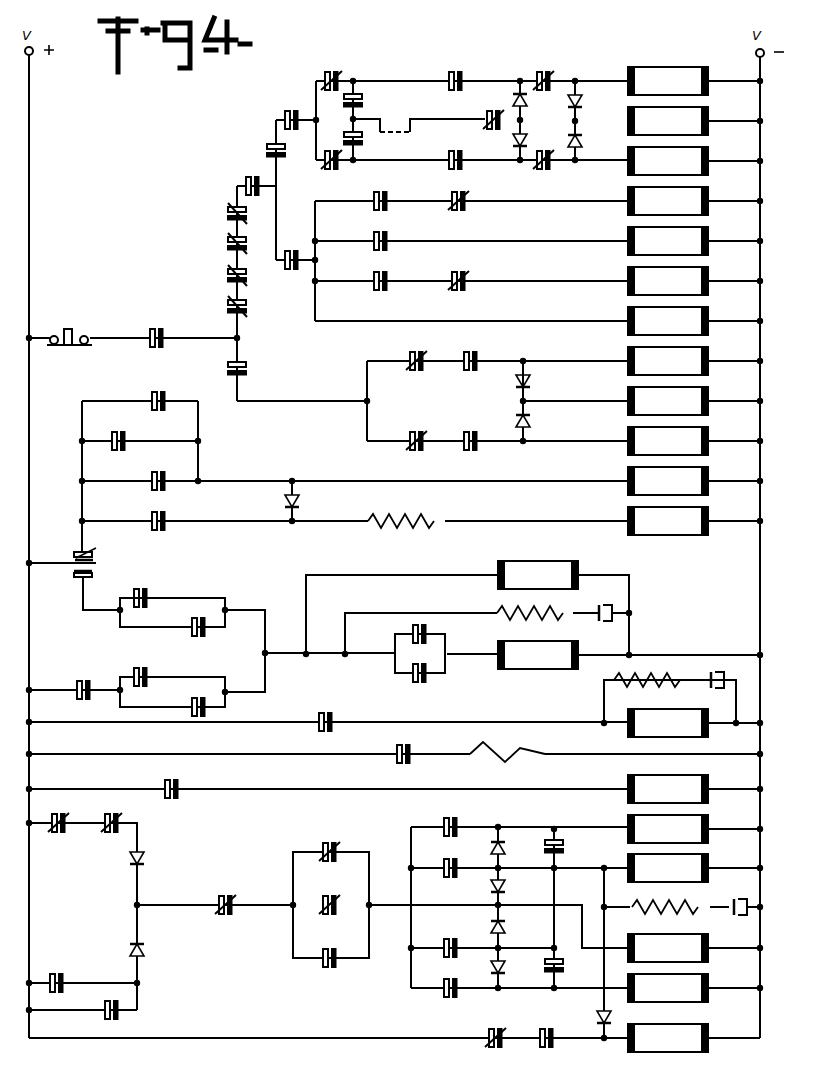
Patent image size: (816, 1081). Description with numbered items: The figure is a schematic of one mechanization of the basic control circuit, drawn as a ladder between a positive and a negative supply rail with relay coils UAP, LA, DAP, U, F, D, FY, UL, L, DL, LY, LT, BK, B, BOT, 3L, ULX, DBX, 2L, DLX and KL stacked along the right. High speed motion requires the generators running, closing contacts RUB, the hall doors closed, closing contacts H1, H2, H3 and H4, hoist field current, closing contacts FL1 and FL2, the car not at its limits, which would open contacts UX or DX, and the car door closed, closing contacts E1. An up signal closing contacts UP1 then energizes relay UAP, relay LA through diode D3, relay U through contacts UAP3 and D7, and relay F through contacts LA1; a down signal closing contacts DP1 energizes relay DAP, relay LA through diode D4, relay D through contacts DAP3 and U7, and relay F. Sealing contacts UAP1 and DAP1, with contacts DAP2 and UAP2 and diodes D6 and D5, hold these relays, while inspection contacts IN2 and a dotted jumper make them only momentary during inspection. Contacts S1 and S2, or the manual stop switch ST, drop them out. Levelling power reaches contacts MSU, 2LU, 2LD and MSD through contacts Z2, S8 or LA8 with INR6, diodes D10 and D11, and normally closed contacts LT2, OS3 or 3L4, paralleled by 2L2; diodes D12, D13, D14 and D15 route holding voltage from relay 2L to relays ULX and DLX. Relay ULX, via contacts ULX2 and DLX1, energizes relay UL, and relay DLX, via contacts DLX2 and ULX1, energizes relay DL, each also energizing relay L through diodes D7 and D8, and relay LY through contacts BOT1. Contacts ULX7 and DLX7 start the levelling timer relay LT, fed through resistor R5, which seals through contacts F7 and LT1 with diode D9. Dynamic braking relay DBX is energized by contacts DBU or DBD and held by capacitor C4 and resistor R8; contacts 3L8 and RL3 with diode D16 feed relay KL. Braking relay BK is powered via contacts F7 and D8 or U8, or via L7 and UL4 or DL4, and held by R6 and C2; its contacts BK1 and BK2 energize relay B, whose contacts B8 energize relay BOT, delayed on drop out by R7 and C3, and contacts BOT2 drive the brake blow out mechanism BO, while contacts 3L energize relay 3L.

The manual stop switch ST is at (62, 328).
The pilot and main generator contacts RUB is at (168, 332).
The elevator car door contacts E1 is at (246, 186).
The hoist motor field contacts FL1 is at (268, 150).
The hall door contacts H1 is at (228, 222).
The hall door contacts H2 is at (228, 252).
The hall door contacts H3 is at (228, 284).
The hall door contacts H4 is at (228, 314).
The levelling switch contacts S1 is at (296, 112).
The levelling switch contacts S2 is at (298, 250).
The upward limit contacts UX is at (325, 70).
The downward limit contacts DX is at (328, 168).
The UAP relay contacts UAP1 is at (364, 102).
The DAP relay contacts DAP1 is at (364, 142).
The up signal contacts UP1 is at (468, 62).
The down signal contacts DP1 is at (448, 156).
The inspection contacts IN2 is at (484, 116).
The diode D6 is at (510, 100).
The diode D5 is at (510, 140).
The DAP relay contacts DAP2 is at (550, 74).
The UAP relay contacts UAP2 is at (550, 172).
The diode D3 is at (582, 100).
The diode D4 is at (582, 142).
The UAP relay contacts UAP3 is at (392, 186).
The D relay contacts and diode D7 is at (466, 194).
The LA relay contacts LA1 is at (390, 236).
The DAP relay contacts DAP3 is at (392, 268).
The U relay contacts U7 is at (460, 272).
The upward high speed relay UAP is at (668, 81).
The high speed relay LA is at (668, 121).
The downward high speed relay DAP is at (668, 161).
The up relay U is at (668, 201).
The F relay F is at (668, 241).
The down relay D is at (668, 281).
The FY relay FY is at (668, 321).
The upward levelling relay UL is at (668, 361).
The levelling relay L is at (668, 401).
The downward levelling relay DL is at (668, 441).
The LY relay LY is at (668, 481).
The levelling timer relay LT is at (668, 521).
The hoist motor field contacts FL2 is at (228, 364).
The DLX relay contacts DLX1 is at (430, 346).
The ULX relay contacts ULX2 is at (468, 354).
The ULX relay contacts ULX1 is at (394, 436).
The DLX relay contacts DLX2 is at (488, 430).
The D relay contacts and diode D8 is at (532, 422).
The ULX relay contacts ULX7 is at (150, 400).
The DLX relay contacts DLX7 is at (134, 430).
The BOT relay contacts BOT1 is at (170, 478).
The LT relay contacts LT1 is at (152, 518).
The diode D9 is at (280, 500).
The resistor R5 is at (404, 518).
The F relay contacts F7 is at (104, 570).
The U relay contacts U8 is at (192, 620).
The L relay contacts L7 is at (92, 684).
The UL relay contacts UL4 is at (156, 666).
The DL relay contacts DL4 is at (192, 700).
The BK relay contacts BK1 is at (414, 630).
The BK relay contacts BK2 is at (428, 680).
The brake relay BK is at (538, 575).
The brake actuating relay B is at (538, 655).
The resistor R6 is at (538, 610).
The capacitor C2 is at (608, 610).
The resistor R7 is at (664, 668).
The capacitor C3 is at (716, 676).
The blow out timer relay BOT is at (668, 723).
The B relay contacts B8 is at (332, 716).
The BOT relay contacts BOT2 is at (414, 740).
The brake blow out mechanism BO is at (507, 747).
The 3L relay and magnetic switch contacts 3L is at (178, 786).
The inspection contacts INR6 is at (84, 806).
The LA relay contacts LA8 is at (130, 808).
The diode D10 is at (146, 856).
The diode D11 is at (128, 952).
The LT relay contacts LT2 is at (224, 894).
The zone signal contacts Z2 is at (66, 980).
The signal system contacts S8 is at (114, 1004).
The overspeed contacts OS3 is at (344, 836).
The 3L relay contacts 3L4 is at (340, 900).
The 2L relay contacts 2L2 is at (340, 952).
The upward magnetic levelling switch contacts MSU is at (438, 820).
The upward second levelling switch contacts 2LU is at (446, 866).
The downward second levelling switch contacts 2LD is at (446, 944).
The downward magnetic levelling switch contacts MSD is at (458, 984).
The diode D12 is at (506, 844).
The diode D13 is at (508, 880).
The diode D14 is at (508, 922).
The diode D15 is at (506, 960).
The upward dynamic braking switch contacts DBU is at (562, 840).
The downward dynamic braking switch contacts DBD is at (558, 964).
The upward levelling auxiliary relay ULX is at (668, 829).
The dynamic braking relay DBX is at (668, 868).
The resistor R8 is at (665, 899).
The capacitor C4 is at (740, 900).
The 2L relay 2L is at (668, 948).
The downward levelling auxiliary relay DLX is at (668, 988).
The KL relay KL is at (668, 1038).
The 3L relay contacts 3L8 is at (500, 1032).
The RL relay contacts RL3 is at (556, 1024).
The diode D16 is at (596, 1022).